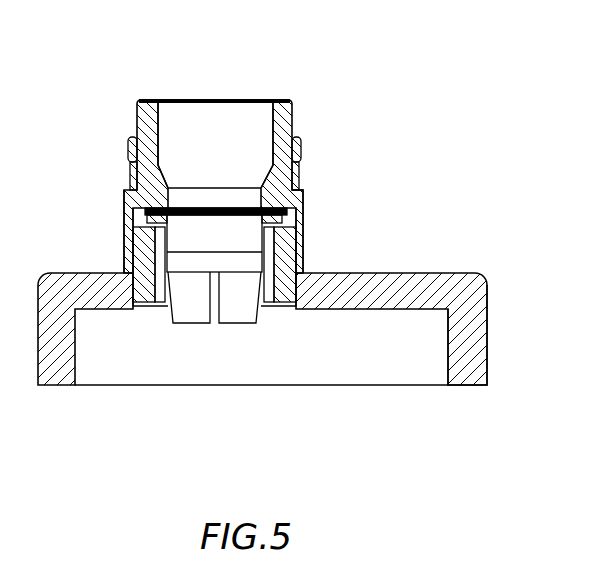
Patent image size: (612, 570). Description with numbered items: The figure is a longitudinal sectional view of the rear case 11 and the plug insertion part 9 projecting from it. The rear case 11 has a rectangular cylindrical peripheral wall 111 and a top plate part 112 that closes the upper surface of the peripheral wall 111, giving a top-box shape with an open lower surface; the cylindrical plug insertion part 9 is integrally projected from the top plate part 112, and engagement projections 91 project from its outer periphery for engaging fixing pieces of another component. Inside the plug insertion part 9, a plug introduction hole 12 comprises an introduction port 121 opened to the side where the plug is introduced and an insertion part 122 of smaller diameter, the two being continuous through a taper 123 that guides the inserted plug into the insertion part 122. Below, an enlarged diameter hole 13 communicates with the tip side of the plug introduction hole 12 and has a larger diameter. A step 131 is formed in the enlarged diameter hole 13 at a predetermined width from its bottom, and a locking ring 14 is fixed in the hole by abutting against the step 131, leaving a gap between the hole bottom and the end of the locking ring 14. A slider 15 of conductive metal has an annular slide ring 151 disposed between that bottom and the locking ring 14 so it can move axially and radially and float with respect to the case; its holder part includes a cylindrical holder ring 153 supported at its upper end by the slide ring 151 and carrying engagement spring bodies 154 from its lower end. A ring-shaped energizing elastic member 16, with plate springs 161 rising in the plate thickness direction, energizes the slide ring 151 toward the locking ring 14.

The plug insertion part 9 is at (130, 178).
The rear case 11 is at (476, 272).
The peripheral wall 111 is at (472, 342).
The top plate part 112 is at (380, 303).
The plug introduction hole 12 is at (162, 112).
The introduction port 121 is at (190, 113).
The insertion part 122 is at (297, 188).
The taper 123 is at (256, 170).
The enlarged diameter hole 13 is at (124, 240).
The step 131 is at (135, 215).
The locking ring 14 is at (300, 256).
The slider 15 is at (168, 310).
The slide ring 151 is at (296, 210).
The holder ring 153 is at (296, 243).
The engagement spring bodies 154 is at (257, 325).
The energizing elastic member 16 is at (213, 208).
The plate springs 161 is at (237, 216).
The engagement projections 91 is at (301, 158).